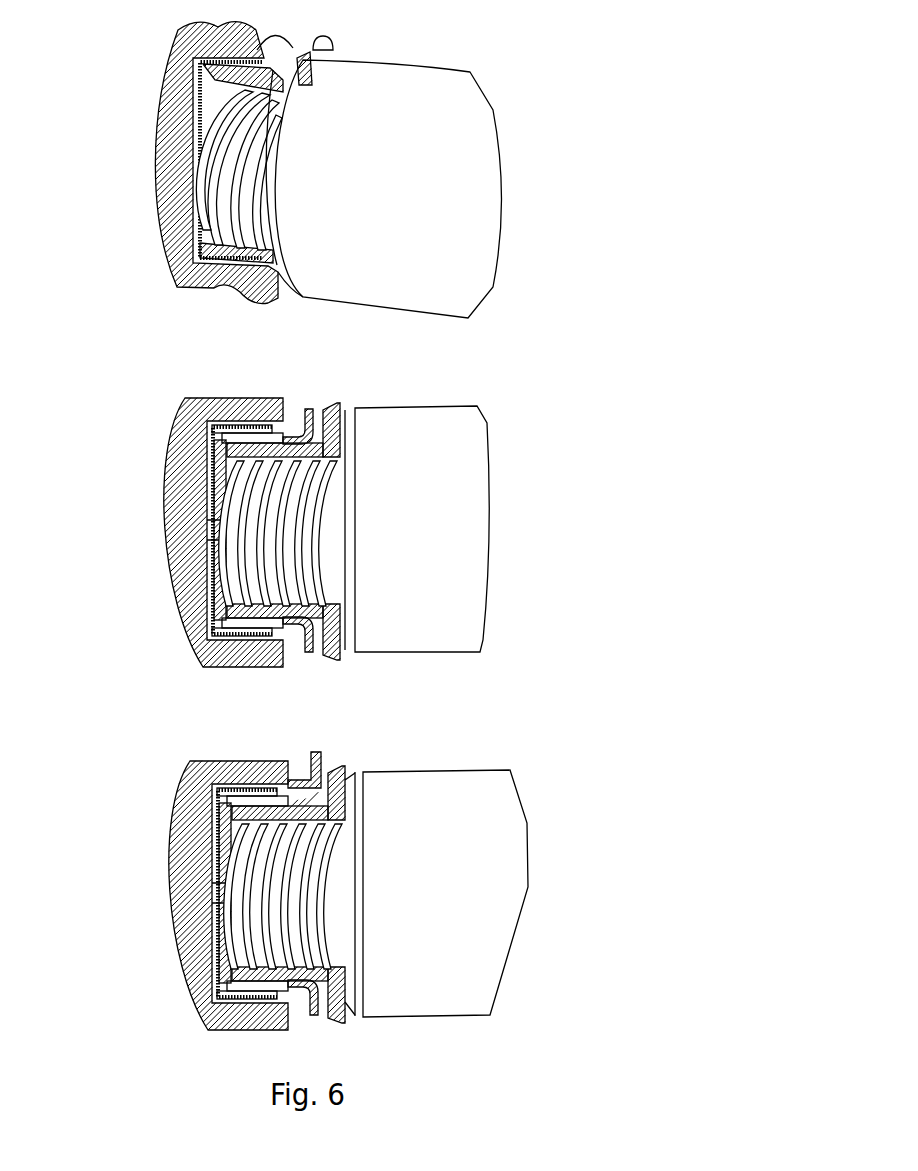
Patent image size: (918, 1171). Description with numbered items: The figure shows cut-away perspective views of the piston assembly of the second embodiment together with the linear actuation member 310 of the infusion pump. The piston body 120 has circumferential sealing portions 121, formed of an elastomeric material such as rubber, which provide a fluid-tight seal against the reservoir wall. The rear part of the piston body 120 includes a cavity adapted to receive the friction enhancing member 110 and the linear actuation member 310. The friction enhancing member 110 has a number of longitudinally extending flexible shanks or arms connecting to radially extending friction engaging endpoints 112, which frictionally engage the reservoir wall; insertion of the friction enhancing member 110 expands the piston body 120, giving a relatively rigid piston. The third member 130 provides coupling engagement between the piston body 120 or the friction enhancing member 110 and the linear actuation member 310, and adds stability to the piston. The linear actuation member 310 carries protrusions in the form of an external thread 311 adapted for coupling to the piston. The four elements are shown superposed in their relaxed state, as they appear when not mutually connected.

The friction enhancing member 110 is at (207, 595).
The friction engaging endpoints 112 is at (333, 43).
The piston body 120 is at (308, 536).
The circumferential sealing portions 121 is at (202, 398).
The third member 130 is at (343, 402).
The linear actuation member 310 is at (461, 404).
The external thread 311 is at (330, 537).